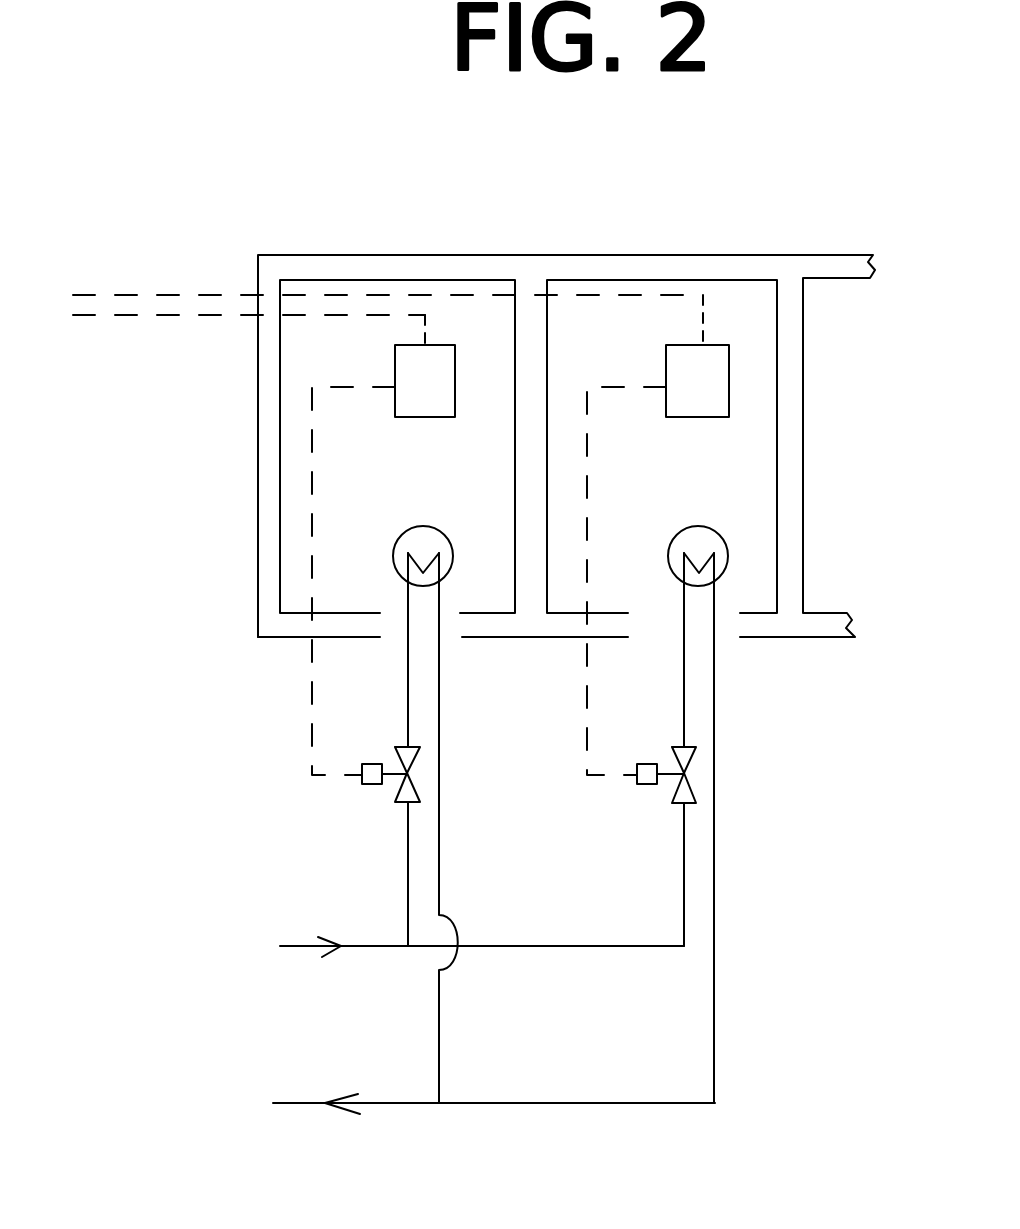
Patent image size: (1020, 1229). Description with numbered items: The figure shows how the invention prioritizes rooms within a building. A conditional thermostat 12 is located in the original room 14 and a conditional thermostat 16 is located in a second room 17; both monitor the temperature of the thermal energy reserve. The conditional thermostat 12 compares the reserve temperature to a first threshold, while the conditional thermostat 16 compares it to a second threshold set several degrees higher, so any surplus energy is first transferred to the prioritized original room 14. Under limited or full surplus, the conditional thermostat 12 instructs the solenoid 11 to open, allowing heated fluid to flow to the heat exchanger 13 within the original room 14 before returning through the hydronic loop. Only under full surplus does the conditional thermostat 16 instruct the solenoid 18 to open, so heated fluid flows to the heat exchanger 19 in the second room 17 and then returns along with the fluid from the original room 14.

The solenoid 11 is at (386, 757).
The conditional thermostat 12 is at (383, 545).
The heat exchanger 13 is at (440, 543).
The original room 14 is at (397, 402).
The conditional thermostat 16 is at (658, 535).
The second room 17 is at (662, 408).
The solenoid 18 is at (663, 756).
The heat exchanger 19 is at (717, 545).